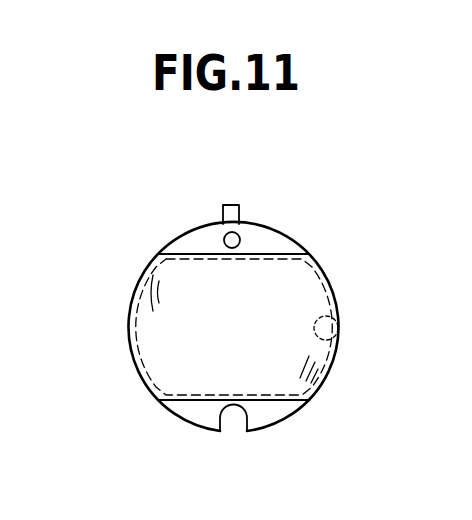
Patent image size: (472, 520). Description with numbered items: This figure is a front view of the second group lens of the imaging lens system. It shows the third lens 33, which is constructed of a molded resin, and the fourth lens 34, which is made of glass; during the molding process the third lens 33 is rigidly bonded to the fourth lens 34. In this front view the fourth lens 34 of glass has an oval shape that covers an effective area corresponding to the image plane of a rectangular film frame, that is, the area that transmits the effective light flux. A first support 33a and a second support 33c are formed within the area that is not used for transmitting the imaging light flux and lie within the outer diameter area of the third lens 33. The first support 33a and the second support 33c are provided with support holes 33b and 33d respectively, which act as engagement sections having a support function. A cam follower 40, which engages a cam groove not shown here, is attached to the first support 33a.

The third lens 33 is at (167, 366).
The first support 33a is at (185, 247).
The support hole 33b is at (238, 236).
The second support 33c is at (280, 410).
The support hole 33d is at (233, 420).
The fourth lens 34 is at (342, 343).
The cam follower 40 is at (232, 212).